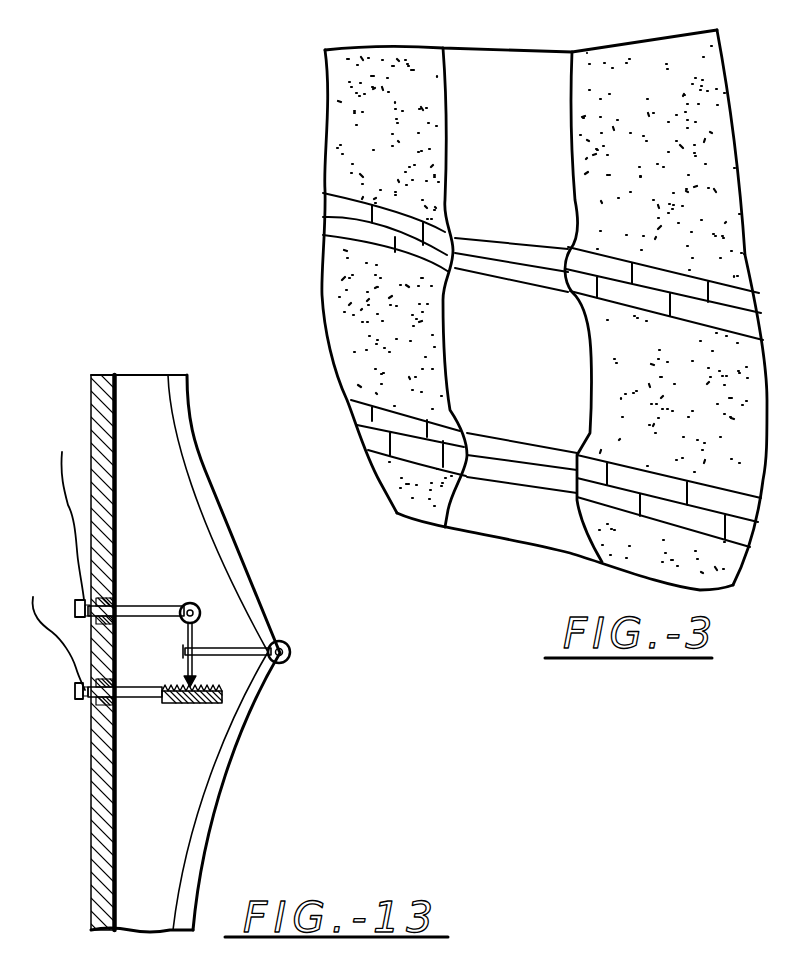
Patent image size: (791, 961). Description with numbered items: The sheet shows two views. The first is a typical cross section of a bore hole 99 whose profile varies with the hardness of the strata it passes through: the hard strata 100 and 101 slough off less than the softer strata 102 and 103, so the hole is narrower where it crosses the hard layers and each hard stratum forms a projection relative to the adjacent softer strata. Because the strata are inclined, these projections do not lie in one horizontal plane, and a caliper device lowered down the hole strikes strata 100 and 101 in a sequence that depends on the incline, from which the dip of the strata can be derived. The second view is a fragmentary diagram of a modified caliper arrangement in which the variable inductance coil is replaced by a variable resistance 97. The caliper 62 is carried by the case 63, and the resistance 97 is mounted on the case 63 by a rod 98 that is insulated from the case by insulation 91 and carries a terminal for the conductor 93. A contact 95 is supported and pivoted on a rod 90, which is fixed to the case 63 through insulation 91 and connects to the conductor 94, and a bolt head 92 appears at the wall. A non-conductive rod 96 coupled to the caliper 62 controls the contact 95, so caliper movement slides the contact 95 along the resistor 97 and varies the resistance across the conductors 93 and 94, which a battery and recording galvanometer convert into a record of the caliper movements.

In FIG. 3, the bore hole 99 is at (550, 90).
In FIG. 3, the hard stratum 100 is at (340, 193).
In FIG. 3, the hard stratum 101 is at (704, 520).
In FIG. 3, the soft stratum 102 is at (641, 167).
In FIG. 3, the soft stratum 103 is at (697, 438).
In FIG. 13, the caliper 62 is at (224, 533).
In FIG. 13, the case 63 is at (91, 424).
In FIG. 13, the rod 90 is at (157, 606).
In FIG. 13, the insulation 91 is at (118, 602).
In FIG. 13, the upper bolt head 92 is at (80, 605).
In FIG. 13, the conductor 93 is at (72, 660).
In FIG. 13, the conductor 94 is at (72, 542).
In FIG. 13, the contact 95 is at (197, 645).
In FIG. 13, the non-conductive rod 96 is at (251, 659).
In FIG. 13, the variable resistance 97 is at (204, 703).
In FIG. 13, the rod 98 is at (133, 689).